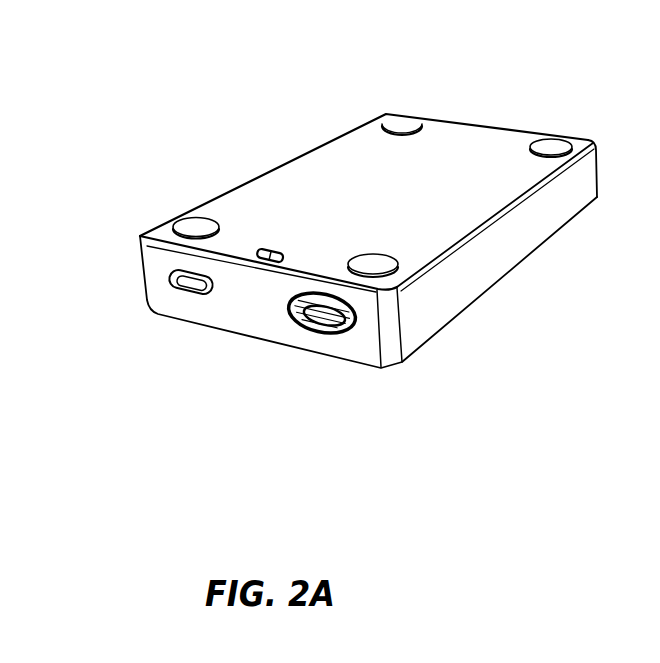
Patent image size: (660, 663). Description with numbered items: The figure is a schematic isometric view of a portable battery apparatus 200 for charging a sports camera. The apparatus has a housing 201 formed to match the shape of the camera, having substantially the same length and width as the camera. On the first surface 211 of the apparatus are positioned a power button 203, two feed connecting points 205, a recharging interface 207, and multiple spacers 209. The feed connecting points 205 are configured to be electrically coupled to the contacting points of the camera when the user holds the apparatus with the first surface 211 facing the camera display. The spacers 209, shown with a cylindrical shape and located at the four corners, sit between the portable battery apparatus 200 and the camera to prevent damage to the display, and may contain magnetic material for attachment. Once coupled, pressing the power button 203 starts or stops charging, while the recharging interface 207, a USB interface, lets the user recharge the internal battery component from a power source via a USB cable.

The portable battery apparatus 200 is at (362, 46).
The housing 201 is at (248, 210).
The power button 203 is at (190, 288).
The feed connecting points 205 is at (258, 254).
The recharging interface 207 is at (349, 323).
The spacers 209 is at (548, 139).
The first surface 211 is at (429, 174).